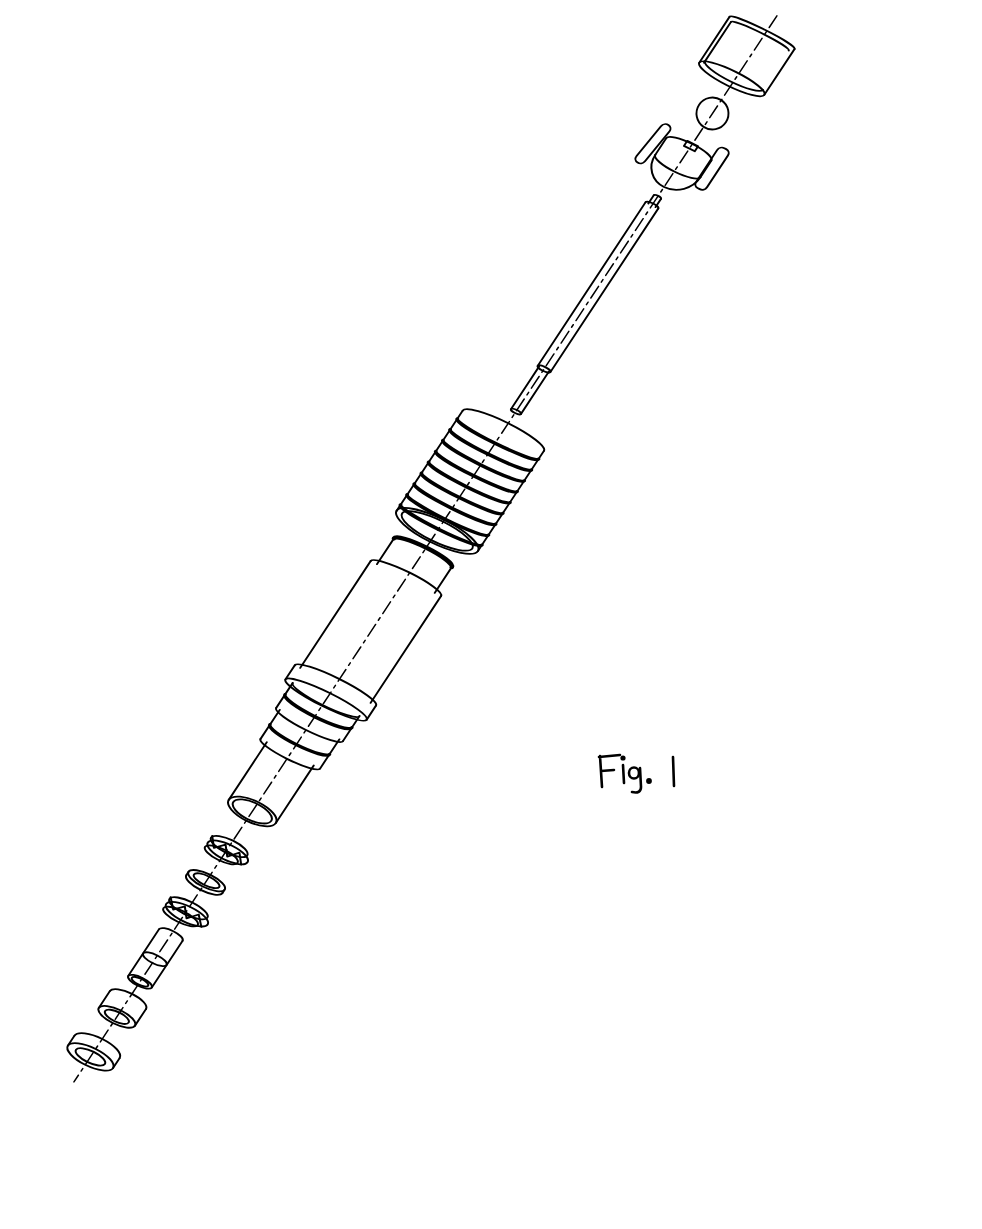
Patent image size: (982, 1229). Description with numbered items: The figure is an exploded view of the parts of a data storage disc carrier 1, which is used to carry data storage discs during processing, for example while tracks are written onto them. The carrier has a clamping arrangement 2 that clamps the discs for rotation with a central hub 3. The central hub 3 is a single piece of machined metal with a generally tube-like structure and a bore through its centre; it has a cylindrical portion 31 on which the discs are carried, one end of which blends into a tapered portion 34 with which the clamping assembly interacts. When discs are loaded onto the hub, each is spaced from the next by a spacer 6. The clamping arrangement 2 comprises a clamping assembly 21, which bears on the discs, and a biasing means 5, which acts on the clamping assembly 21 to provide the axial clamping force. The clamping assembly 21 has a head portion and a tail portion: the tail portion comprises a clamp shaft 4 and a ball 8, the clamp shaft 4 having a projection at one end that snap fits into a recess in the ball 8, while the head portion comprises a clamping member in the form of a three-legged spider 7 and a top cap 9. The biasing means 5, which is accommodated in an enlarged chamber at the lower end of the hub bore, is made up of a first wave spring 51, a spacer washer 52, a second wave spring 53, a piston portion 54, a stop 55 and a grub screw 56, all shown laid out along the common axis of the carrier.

The data storage disc carrier 1 is at (125, 66).
The clamping arrangement 2 is at (131, 765).
The clamping assembly 21 is at (566, 212).
The central hub 3 is at (330, 665).
The cylindrical portion 31 is at (352, 615).
The tapered portion 34 is at (394, 550).
The clamp shaft 4 is at (600, 290).
The biasing means 5 is at (324, 941).
The first wave spring 51 is at (247, 850).
The spacer washer 52 is at (217, 887).
The second wave spring 53 is at (200, 917).
The piston portion 54 is at (165, 953).
The stop 55 is at (138, 1015).
The grub screw 56 is at (115, 1063).
The spacer 6 is at (480, 540).
The three-legged spider 7 is at (703, 173).
The ball 8 is at (725, 115).
The top cap 9 is at (765, 58).